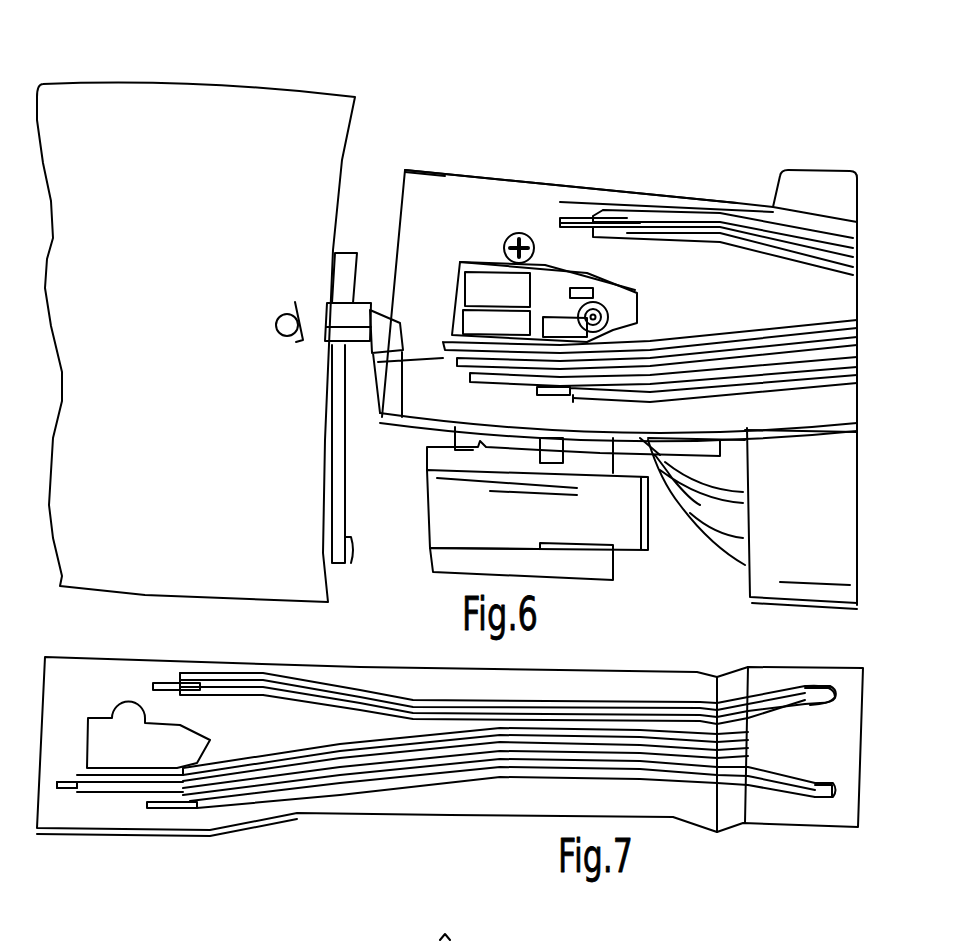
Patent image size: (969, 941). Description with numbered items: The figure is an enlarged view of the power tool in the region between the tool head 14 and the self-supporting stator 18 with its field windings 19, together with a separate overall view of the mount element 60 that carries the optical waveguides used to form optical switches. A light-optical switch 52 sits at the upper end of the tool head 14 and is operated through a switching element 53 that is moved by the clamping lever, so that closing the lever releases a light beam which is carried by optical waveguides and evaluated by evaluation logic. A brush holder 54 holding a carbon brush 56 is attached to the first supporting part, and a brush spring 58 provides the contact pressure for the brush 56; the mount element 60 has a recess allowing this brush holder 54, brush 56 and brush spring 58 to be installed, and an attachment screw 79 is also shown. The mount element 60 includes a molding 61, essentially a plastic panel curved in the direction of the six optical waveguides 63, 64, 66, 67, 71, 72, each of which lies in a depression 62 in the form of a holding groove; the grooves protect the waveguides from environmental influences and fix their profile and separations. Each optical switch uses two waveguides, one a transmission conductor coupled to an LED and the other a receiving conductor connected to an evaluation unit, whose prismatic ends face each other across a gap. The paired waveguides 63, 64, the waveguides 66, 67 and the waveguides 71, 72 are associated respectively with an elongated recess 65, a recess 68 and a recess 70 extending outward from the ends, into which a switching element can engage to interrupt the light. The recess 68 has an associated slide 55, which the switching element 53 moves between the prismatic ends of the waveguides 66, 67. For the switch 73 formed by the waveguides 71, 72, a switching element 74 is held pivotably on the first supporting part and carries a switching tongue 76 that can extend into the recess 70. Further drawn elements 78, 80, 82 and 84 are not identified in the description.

In FIG. 6, the tool head 14 is at (232, 140).
In FIG. 6, the stator 18 is at (815, 195).
In FIG. 6, the field windings 19 is at (712, 540).
In FIG. 6, the light-optical switch 52 is at (352, 300).
In FIG. 6, the switching element 53 is at (283, 325).
In FIG. 6, the brush holder 54 is at (457, 300).
In FIG. 6, the slide 55 is at (374, 360).
In FIG. 6, the brush 56 is at (500, 295).
In FIG. 6, the brush spring 58 is at (620, 300).
In FIG. 6, the mount element 60 is at (425, 165).
In FIG. 6, the molding 61 is at (457, 195).
In FIG. 7, the molding 61 is at (98, 688).
In FIG. 6, the depressions 62 is at (737, 205).
In FIG. 7, the depressions 62 is at (387, 700).
In FIG. 6, the optical waveguide 63 is at (670, 220).
In FIG. 7, the optical waveguide 63 is at (250, 690).
In FIG. 6, the optical waveguide 64 is at (638, 232).
In FIG. 7, the optical waveguide 64 is at (305, 700).
In FIG. 6, the elongated recess 65 is at (578, 215).
In FIG. 7, the elongated recess 65 is at (165, 690).
In FIG. 6, the optical waveguide 66 is at (472, 350).
In FIG. 7, the optical waveguide 66 is at (235, 765).
In FIG. 6, the optical waveguide 67 is at (508, 366).
In FIG. 7, the optical waveguide 67 is at (300, 760).
In FIG. 6, the recess 68 is at (402, 430).
In FIG. 7, the recess 68 is at (65, 790).
In FIG. 6, the recess 70 is at (530, 403).
In FIG. 7, the recess 70 is at (160, 810).
In FIG. 6, the optical waveguide 71 is at (690, 387).
In FIG. 7, the optical waveguide 71 is at (316, 782).
In FIG. 6, the optical waveguide 72 is at (700, 407).
In FIG. 7, the optical waveguide 72 is at (265, 800).
In FIG. 6, the switch 73 is at (455, 470).
In FIG. 6, the switching element 74 is at (590, 505).
In FIG. 6, the switching tongue 76 is at (547, 398).
In FIG. 6, the cover 78 is at (540, 187).
In FIG. 7, the cover 78 is at (98, 742).
In FIG. 6, the attachment screw 79 is at (520, 232).
In FIG. 7, the contact tip 80 is at (817, 797).
In FIG. 7, the contact tip 82 is at (823, 703).
In FIG. 7, the cable 84 is at (455, 940).